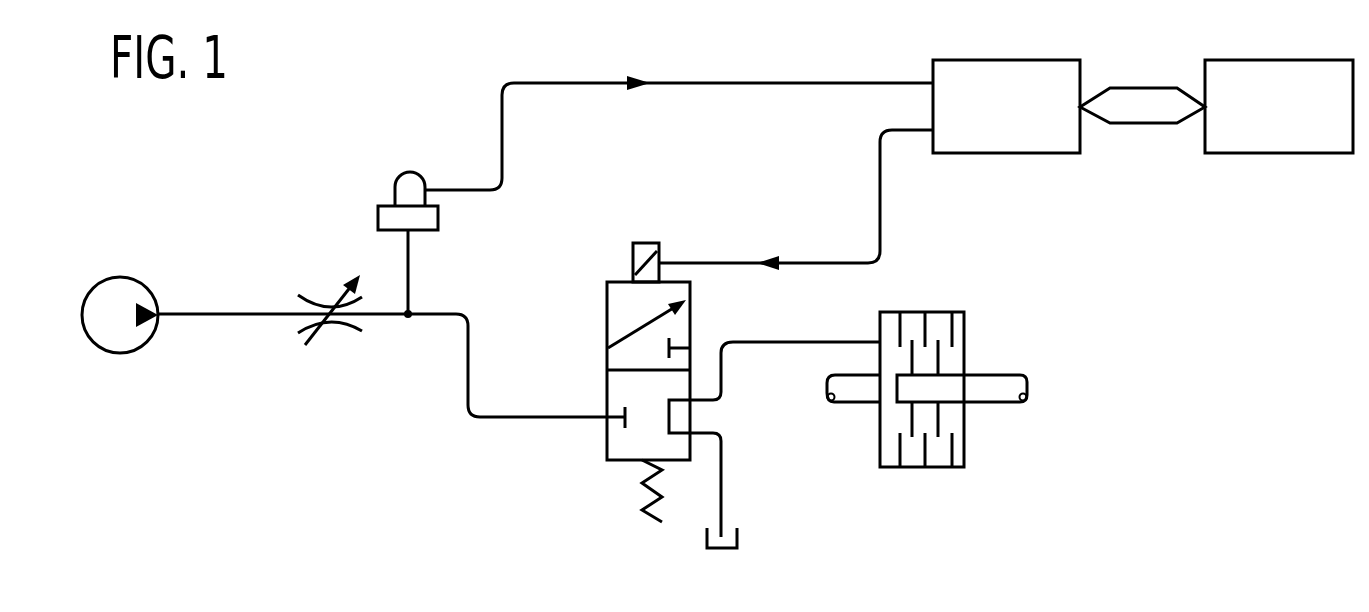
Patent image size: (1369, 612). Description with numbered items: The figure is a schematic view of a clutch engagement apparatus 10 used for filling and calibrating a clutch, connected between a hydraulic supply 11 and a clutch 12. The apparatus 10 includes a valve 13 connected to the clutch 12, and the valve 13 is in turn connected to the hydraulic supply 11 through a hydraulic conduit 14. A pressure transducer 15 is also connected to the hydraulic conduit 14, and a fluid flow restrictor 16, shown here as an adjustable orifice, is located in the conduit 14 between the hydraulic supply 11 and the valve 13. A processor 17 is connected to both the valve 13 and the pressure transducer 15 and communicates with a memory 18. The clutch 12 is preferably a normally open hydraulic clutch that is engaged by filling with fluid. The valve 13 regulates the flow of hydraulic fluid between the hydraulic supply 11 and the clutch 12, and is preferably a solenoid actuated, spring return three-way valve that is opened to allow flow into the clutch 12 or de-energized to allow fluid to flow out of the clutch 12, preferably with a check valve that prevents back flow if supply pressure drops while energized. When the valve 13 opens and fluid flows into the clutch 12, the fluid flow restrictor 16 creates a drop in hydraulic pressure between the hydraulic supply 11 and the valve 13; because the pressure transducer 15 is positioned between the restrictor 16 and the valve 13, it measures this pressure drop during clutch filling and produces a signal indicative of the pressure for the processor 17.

The clutch engagement apparatus 10 is at (358, 442).
The hydraulic supply 11 is at (116, 281).
The clutch 12 is at (912, 312).
The valve 13 is at (648, 243).
The hydraulic conduit 14 is at (252, 312).
The pressure transducer 15 is at (394, 186).
The fluid flow restrictor 16 is at (337, 300).
The processor 17 is at (1020, 120).
The memory 18 is at (1263, 120).